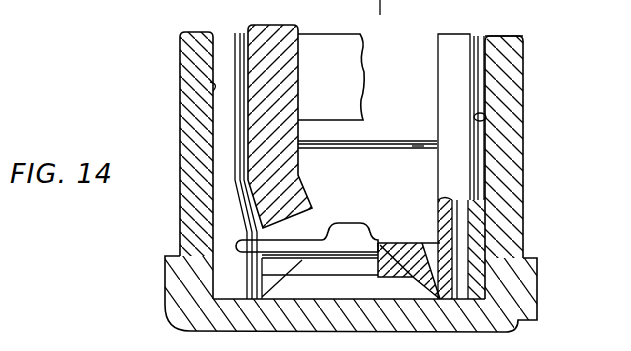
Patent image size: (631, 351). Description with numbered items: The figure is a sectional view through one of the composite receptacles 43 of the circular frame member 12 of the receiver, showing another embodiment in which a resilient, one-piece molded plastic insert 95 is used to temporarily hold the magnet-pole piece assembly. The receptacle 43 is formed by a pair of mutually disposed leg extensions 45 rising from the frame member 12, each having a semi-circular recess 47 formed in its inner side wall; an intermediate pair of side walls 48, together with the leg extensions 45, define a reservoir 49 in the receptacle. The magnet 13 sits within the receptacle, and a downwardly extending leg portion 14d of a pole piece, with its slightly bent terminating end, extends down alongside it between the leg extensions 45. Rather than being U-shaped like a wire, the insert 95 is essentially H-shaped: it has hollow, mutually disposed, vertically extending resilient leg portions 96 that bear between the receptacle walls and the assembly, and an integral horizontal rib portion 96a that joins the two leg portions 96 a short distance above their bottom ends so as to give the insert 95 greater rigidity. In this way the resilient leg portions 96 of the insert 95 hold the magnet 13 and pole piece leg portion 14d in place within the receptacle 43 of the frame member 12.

The frame member 12 is at (165, 287).
The magnet 13 is at (350, 83).
The downwardly extending leg portion 14d is at (267, 197).
The receptacle 43 is at (532, 35).
The leg extension 45 is at (190, 50).
The semi-circular recess 47 is at (210, 82).
The side wall 48 is at (373, 143).
The reservoir 49 is at (418, 140).
The insert 95 is at (322, 228).
The resilient leg portion 96 is at (225, 123).
The horizontal rib portion 96a is at (390, 242).